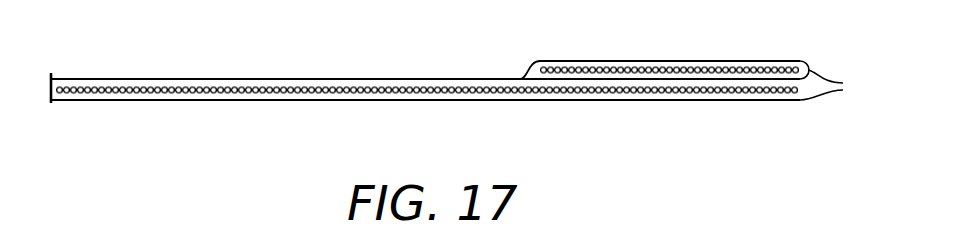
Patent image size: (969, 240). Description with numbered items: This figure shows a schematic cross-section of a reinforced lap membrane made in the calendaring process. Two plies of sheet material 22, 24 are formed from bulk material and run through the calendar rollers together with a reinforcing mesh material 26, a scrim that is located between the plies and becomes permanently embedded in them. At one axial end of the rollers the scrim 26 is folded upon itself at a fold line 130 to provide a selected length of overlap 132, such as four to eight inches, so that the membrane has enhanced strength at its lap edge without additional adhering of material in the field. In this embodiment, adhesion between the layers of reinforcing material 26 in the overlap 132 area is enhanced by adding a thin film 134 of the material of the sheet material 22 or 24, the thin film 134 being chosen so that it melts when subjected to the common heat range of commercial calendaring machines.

The sheet material 22 is at (281, 79).
The sheet material 24 is at (231, 100).
The mesh material 26 is at (377, 91).
The fold line 130 is at (808, 70).
The overlap 132 is at (538, 61).
The thin film 134 is at (528, 78).